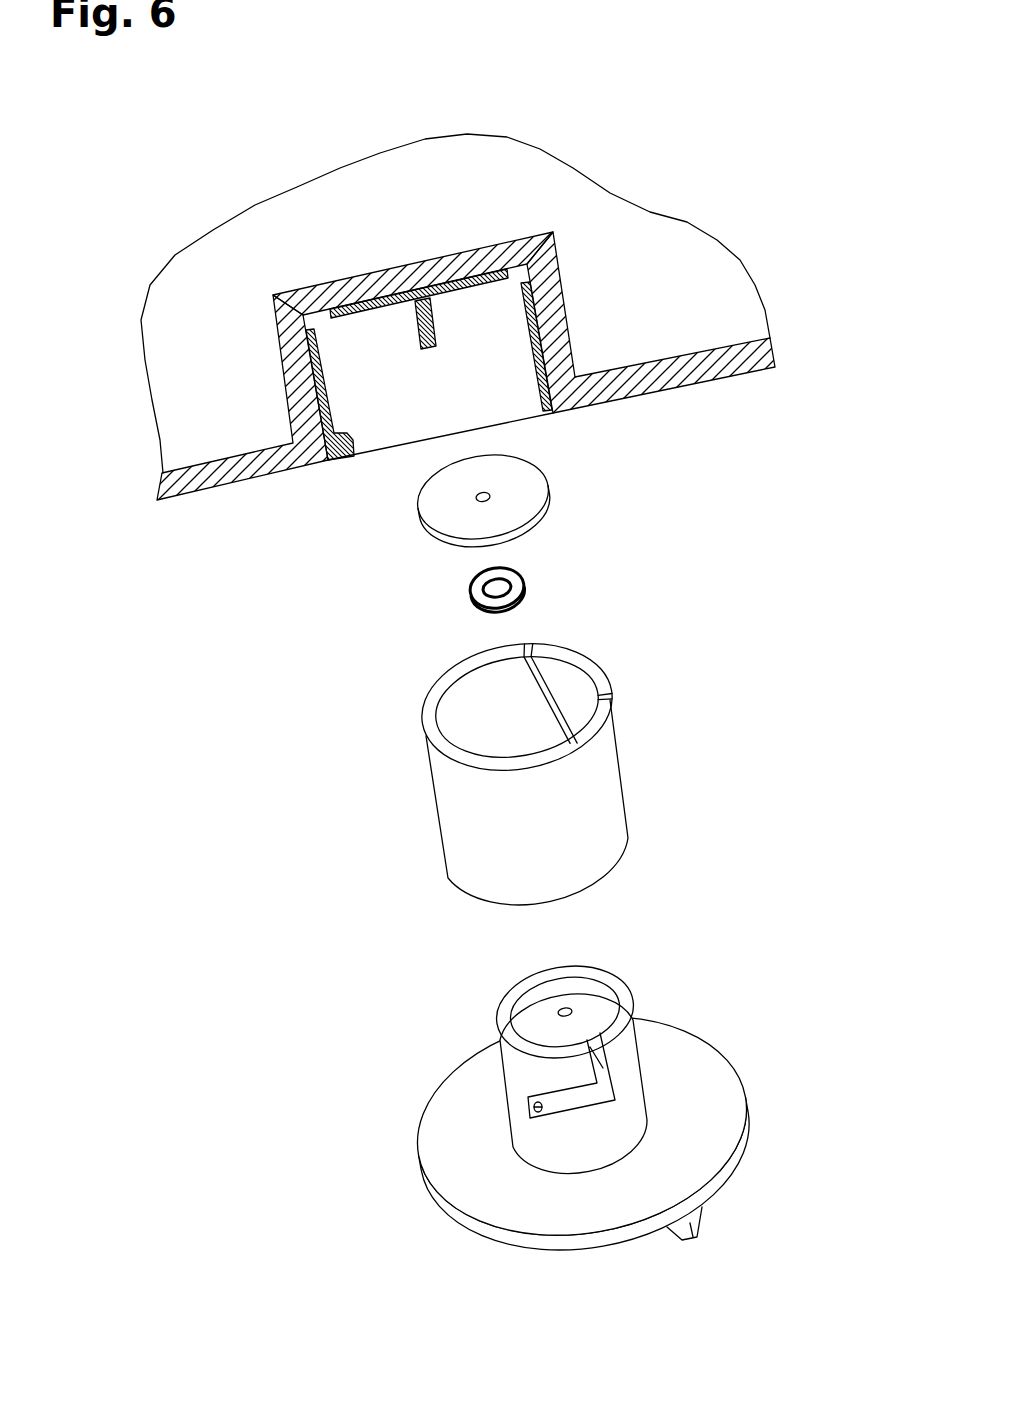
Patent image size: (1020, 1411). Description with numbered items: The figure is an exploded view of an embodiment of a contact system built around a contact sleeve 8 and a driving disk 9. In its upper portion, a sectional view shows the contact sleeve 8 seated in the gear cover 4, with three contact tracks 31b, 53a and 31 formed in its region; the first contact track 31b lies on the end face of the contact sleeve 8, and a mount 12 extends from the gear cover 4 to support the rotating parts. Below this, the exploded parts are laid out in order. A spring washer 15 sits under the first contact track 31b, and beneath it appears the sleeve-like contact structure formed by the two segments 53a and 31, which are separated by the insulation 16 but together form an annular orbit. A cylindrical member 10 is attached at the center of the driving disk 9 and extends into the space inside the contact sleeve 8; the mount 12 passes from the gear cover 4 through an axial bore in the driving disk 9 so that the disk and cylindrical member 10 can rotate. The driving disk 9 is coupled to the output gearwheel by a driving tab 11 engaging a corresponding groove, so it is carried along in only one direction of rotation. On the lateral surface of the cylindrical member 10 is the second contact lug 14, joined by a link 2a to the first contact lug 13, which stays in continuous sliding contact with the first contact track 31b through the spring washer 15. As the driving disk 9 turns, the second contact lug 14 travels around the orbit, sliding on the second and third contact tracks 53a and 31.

The link 2a is at (605, 1067).
The gear cover 4 is at (233, 480).
The contact sleeve 8 is at (252, 385).
The driving disk 9 is at (493, 1237).
The cylindrical member 10 is at (630, 1082).
The driving tab 11 is at (692, 1223).
The mount 12 is at (422, 345).
The first contact lug 13 is at (597, 1000).
The second contact lug 14 is at (528, 1105).
The spring washer 15 is at (468, 592).
The insulation 16 is at (530, 648).
The third contact track 31 is at (540, 357).
The first contact track 31b is at (482, 273).
The second contact track 53a is at (340, 447).